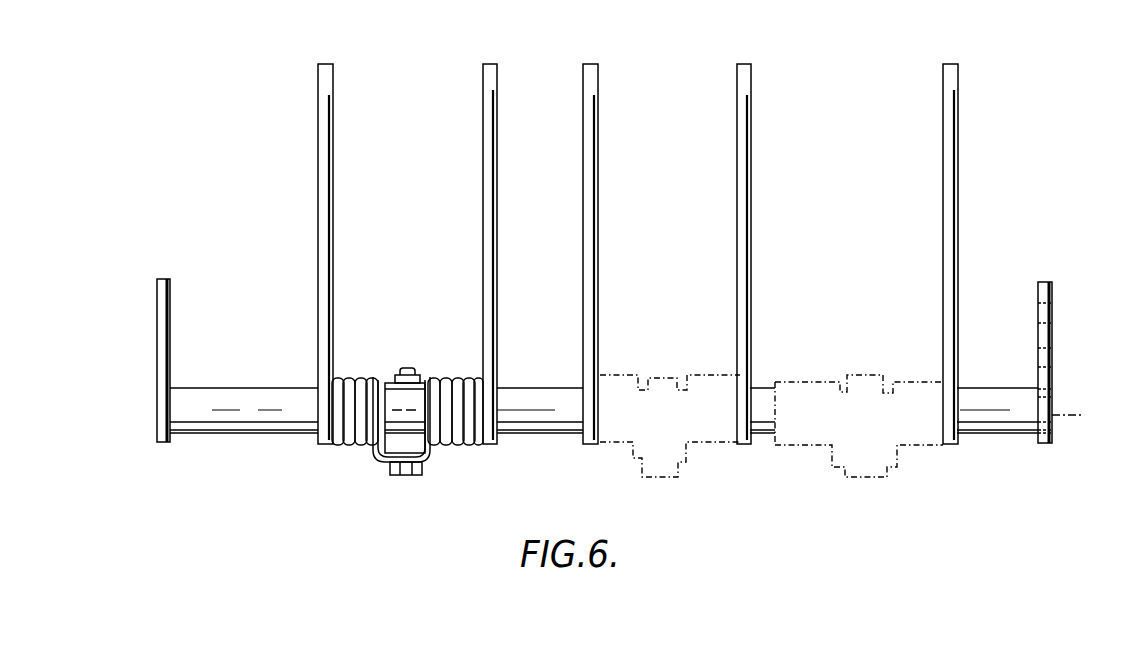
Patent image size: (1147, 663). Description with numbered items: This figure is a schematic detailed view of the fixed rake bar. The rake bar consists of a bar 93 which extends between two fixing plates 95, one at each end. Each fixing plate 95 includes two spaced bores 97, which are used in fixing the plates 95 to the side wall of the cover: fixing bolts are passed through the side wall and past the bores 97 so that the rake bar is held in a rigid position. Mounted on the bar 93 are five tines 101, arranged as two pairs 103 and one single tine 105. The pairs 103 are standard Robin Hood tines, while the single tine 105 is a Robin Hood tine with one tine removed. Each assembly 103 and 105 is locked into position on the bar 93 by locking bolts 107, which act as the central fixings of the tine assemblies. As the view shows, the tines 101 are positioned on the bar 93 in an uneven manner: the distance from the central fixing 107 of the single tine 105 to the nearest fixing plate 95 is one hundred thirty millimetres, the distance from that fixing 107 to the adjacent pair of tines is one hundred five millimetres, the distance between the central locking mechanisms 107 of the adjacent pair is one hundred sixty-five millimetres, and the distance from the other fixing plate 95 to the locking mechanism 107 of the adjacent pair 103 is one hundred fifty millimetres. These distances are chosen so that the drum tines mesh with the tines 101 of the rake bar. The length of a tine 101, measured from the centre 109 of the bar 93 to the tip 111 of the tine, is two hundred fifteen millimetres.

The bar 93 is at (210, 412).
The fixing plate 95 is at (158, 341).
The bore 97 is at (1052, 312).
The tine 101 is at (324, 236).
The pair of tines 103 is at (489, 234).
The single tine 105 is at (946, 231).
The locking bolt 107 is at (413, 438).
The centre of the bar 109 is at (1070, 422).
The tip of the tine 111 is at (946, 86).